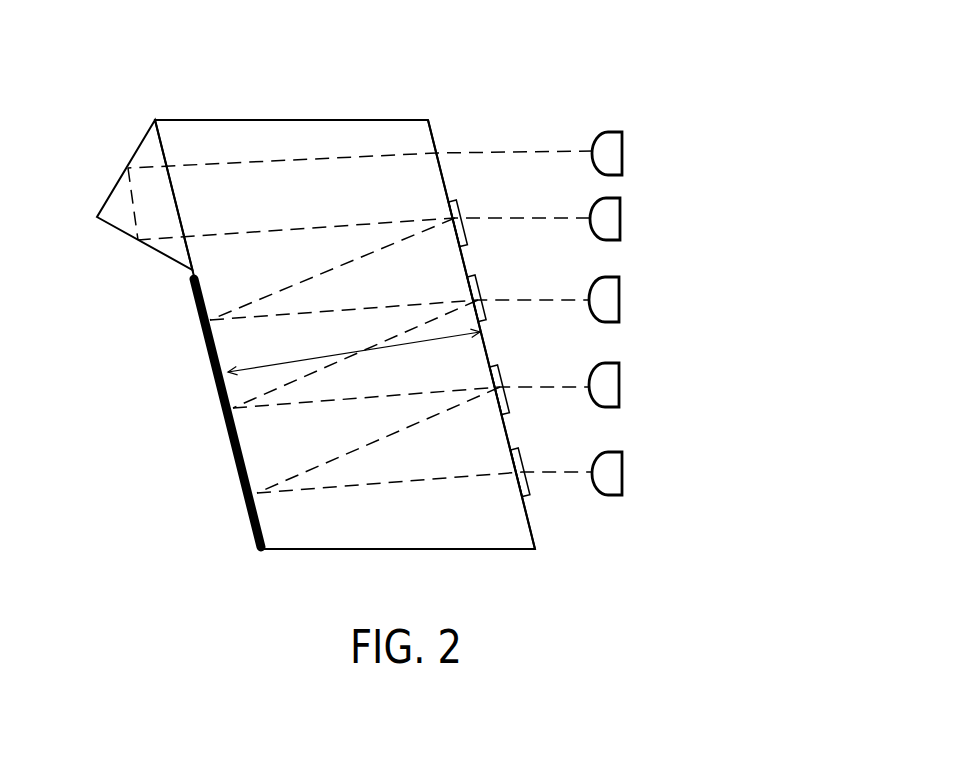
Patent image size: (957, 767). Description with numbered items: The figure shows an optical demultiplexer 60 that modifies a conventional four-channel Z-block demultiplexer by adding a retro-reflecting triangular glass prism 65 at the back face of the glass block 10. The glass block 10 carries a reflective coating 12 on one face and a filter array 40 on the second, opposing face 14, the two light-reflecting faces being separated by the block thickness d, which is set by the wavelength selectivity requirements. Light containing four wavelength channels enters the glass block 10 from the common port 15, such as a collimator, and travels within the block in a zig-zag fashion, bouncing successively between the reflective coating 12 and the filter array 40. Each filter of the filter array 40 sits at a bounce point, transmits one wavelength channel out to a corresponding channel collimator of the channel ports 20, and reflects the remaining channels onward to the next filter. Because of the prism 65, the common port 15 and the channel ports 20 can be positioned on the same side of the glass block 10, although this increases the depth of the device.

The optical demultiplexer 60 is at (365, 56).
The glass block 10 is at (207, 120).
The retro-reflecting triangular glass prism 65 is at (146, 140).
The second, opposing face 14 is at (424, 132).
The filter array 40 is at (453, 186).
The common port 15 is at (610, 131).
The reflective coating 12 is at (193, 309).
The channel ports 20 is at (605, 523).